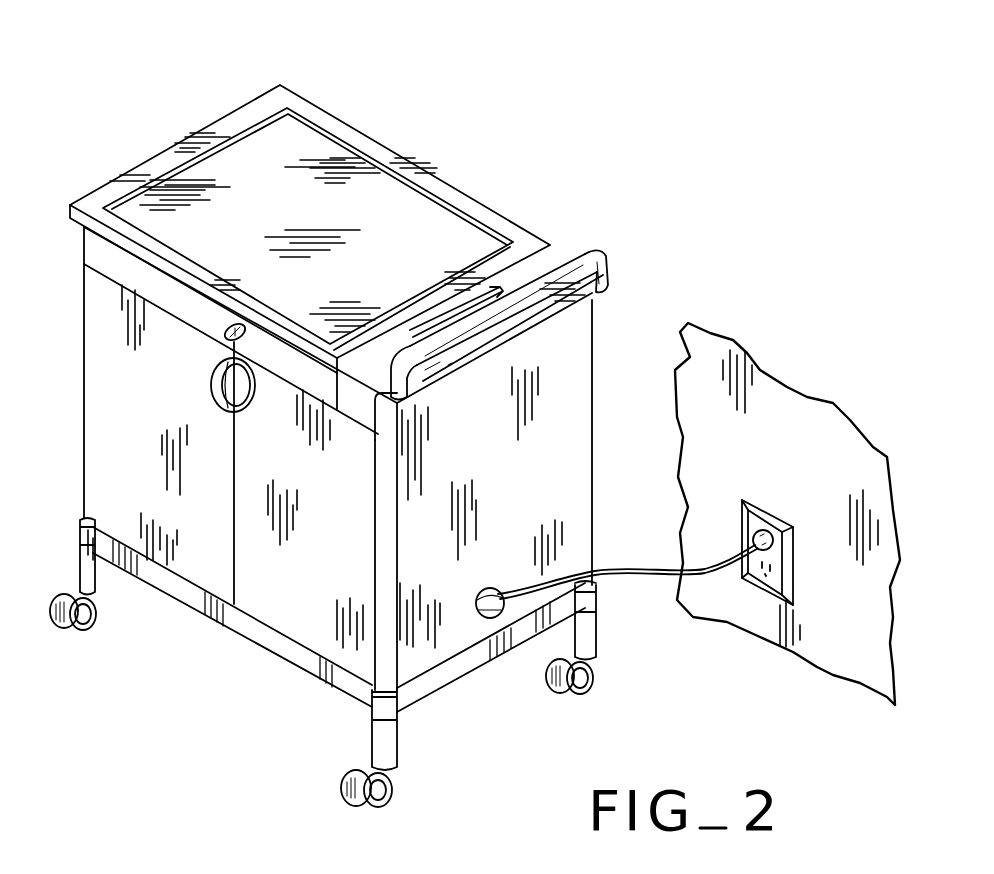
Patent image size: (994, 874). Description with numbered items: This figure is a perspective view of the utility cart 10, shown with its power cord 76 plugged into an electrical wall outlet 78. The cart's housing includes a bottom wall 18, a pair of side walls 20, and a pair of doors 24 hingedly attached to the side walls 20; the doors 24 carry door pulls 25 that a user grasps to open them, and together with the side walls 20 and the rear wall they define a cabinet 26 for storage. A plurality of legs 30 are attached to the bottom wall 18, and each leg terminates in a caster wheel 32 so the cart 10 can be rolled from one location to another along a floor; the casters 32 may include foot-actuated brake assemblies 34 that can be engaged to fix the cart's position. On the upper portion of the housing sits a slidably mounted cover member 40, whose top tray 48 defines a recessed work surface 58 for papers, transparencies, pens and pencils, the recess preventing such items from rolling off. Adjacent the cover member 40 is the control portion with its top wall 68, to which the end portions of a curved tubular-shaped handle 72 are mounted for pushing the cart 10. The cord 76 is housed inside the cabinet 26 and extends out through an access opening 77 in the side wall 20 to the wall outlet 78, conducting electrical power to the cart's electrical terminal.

The utility cart 10 is at (582, 90).
The bottom wall 18 is at (243, 640).
The side walls 20 is at (525, 478).
The doors 24 is at (161, 413).
The door pulls 25 is at (250, 403).
The cabinet 26 is at (74, 316).
The legs 30 is at (82, 556).
The caster wheels 32 is at (95, 626).
The foot-actuated brake assemblies 34 is at (70, 628).
The cover member 40 is at (176, 142).
The top tray 48 is at (413, 165).
The work surface 58 is at (305, 222).
The top wall 68 is at (560, 252).
The curved tubular-shaped handle 72 is at (607, 262).
The cord 76 is at (637, 567).
The access opening 77 is at (505, 585).
The electrical wall outlet 78 is at (782, 513).